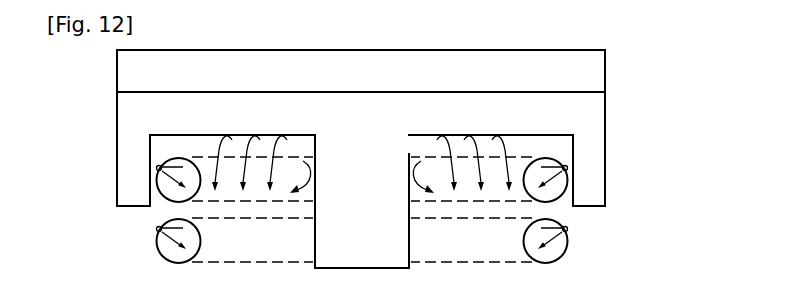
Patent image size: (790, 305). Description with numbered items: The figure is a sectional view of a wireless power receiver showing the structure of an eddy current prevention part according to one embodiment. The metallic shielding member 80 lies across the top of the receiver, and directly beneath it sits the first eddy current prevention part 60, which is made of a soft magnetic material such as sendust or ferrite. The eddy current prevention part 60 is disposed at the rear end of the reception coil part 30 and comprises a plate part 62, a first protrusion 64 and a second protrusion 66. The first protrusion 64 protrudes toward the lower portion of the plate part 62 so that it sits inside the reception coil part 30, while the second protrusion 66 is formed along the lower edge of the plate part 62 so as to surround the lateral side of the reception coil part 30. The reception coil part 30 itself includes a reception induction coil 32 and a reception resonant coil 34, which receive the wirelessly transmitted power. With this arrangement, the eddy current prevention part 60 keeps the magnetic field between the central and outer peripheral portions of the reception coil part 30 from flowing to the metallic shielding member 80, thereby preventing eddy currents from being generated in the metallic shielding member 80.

The metallic shielding member 80 is at (597, 72).
The first eddy current prevention part 60 is at (412, 180).
The plate part 62 is at (597, 121).
The first protrusion 64 is at (666, 118).
The second protrusion 66 is at (597, 167).
The reception coil part 30 is at (310, 210).
The reception induction coil 32 is at (163, 190).
The reception resonant coil 34 is at (163, 254).